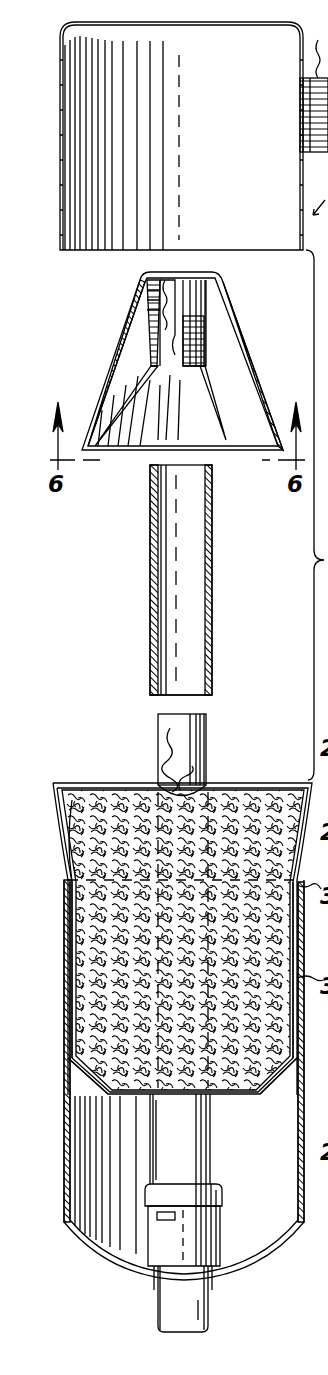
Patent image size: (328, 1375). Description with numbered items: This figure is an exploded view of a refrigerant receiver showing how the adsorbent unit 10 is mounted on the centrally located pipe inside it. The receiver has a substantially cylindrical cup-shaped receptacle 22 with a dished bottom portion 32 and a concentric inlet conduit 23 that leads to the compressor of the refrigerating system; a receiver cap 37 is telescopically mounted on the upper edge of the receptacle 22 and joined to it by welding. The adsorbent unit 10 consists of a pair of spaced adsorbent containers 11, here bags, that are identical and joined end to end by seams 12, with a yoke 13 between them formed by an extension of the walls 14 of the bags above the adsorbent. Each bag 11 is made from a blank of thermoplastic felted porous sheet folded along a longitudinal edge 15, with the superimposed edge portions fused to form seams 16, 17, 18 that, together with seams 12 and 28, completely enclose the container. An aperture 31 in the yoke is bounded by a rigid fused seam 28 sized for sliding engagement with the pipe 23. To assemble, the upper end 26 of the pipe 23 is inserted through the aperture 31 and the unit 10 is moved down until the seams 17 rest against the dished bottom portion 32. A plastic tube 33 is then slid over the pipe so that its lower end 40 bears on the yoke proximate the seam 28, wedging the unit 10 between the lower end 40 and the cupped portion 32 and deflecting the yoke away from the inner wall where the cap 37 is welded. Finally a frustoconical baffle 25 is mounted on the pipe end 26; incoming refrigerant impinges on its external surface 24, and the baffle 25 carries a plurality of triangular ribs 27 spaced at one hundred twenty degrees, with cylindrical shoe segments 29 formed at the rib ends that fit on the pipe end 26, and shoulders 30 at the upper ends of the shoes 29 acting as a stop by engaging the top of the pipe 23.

The adsorbent unit 10 is at (106, 780).
The adsorbent container 11 is at (66, 844).
The seam 12 is at (84, 786).
The yoke 13 is at (140, 762).
The wall 14 is at (146, 916).
The longitudinal edge 15 is at (68, 860).
The fused seam 16 is at (84, 1086).
The fused seam 17 is at (222, 1106).
The fused seam 18 is at (274, 1080).
The receptacle 22 is at (64, 1162).
The inlet conduit 23 is at (178, 1166).
The external surface 24 is at (174, 361).
The frustoconical baffle 25 is at (140, 320).
The upper end 26 is at (207, 724).
The triangular rib 27 is at (122, 360).
The fused seam 28 is at (166, 744).
The cylindrical shoe segment 29 is at (150, 296).
The shoulder 30 is at (176, 272).
The aperture 31 is at (187, 770).
The dished bottom portion 32 is at (98, 1248).
The plastic tube 33 is at (150, 562).
The receiver cap 37 is at (66, 38).
The lower end 40 is at (152, 688).